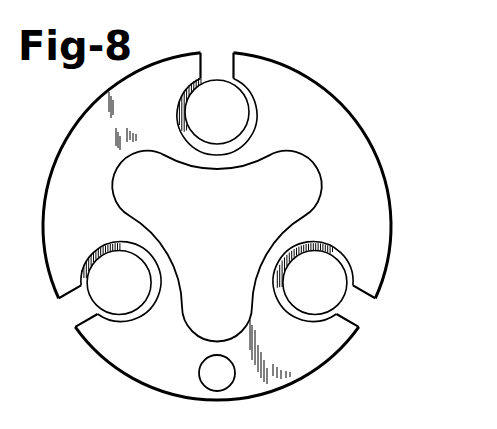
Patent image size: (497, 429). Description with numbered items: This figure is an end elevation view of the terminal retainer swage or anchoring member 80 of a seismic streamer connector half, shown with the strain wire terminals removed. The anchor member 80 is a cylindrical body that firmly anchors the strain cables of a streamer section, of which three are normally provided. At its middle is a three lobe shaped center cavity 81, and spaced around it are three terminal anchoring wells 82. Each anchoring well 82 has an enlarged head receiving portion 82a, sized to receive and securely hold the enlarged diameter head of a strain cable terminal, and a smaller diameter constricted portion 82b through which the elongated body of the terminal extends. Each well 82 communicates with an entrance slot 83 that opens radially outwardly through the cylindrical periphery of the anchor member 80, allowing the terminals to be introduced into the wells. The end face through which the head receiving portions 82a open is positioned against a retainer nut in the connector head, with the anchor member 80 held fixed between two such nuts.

The terminal retainer swage or anchoring member 80 is at (366, 168).
The three lobe shaped center cavity 81 is at (154, 233).
The terminal anchoring wells 82 is at (256, 199).
The enlarged head receiving portion 82a is at (356, 270).
The smaller diameter constricted portion 82b is at (328, 263).
The entrance slot 83 is at (352, 327).